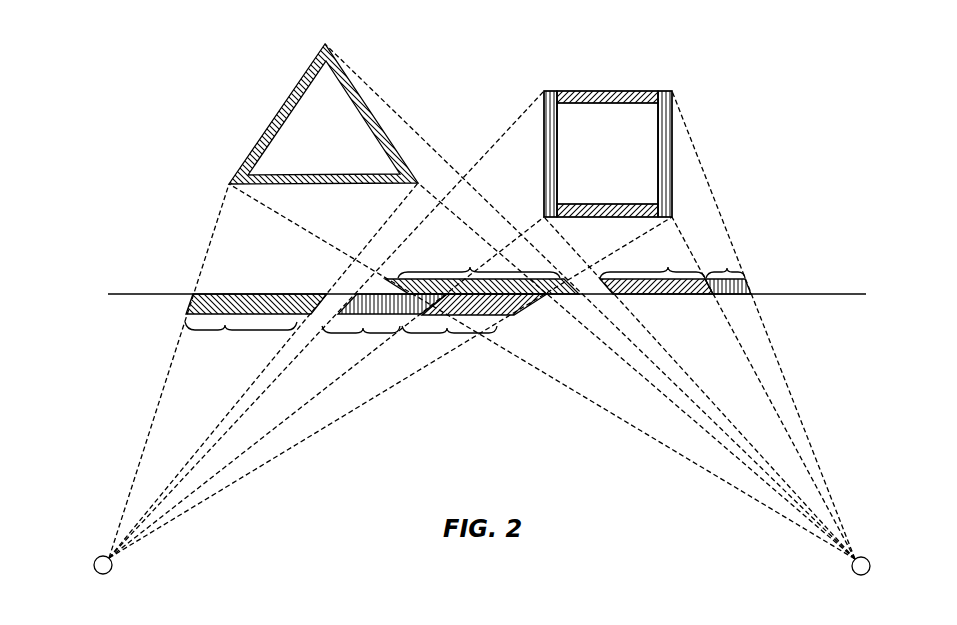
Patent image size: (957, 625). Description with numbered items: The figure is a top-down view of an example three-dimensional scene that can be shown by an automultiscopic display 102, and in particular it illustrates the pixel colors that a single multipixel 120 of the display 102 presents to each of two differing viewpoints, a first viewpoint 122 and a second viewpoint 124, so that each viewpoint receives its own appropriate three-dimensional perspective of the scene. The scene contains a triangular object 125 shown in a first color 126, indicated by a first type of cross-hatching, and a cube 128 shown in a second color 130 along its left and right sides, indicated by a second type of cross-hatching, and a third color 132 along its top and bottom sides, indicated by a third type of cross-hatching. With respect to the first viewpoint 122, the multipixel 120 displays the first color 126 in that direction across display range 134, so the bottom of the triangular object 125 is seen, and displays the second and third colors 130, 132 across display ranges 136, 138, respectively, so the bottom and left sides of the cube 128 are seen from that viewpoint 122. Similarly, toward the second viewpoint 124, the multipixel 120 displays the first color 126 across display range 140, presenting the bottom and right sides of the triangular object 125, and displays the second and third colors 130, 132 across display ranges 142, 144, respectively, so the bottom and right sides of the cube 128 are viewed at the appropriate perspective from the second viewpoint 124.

The automultiscopic display 102 is at (90, 78).
The multipixel 120 is at (845, 293).
The first viewpoint 122 is at (110, 572).
The second viewpoint 124 is at (852, 569).
The triangular object 125 is at (288, 85).
The first color 126 is at (258, 143).
The cube 128 is at (647, 91).
The second color 130 is at (547, 160).
The third color 132 is at (596, 90).
The display range 134 is at (241, 339).
The display range 136 is at (361, 344).
The display range 138 is at (449, 344).
The display range 140 is at (479, 259).
The display range 142 is at (652, 261).
The display range 144 is at (725, 261).